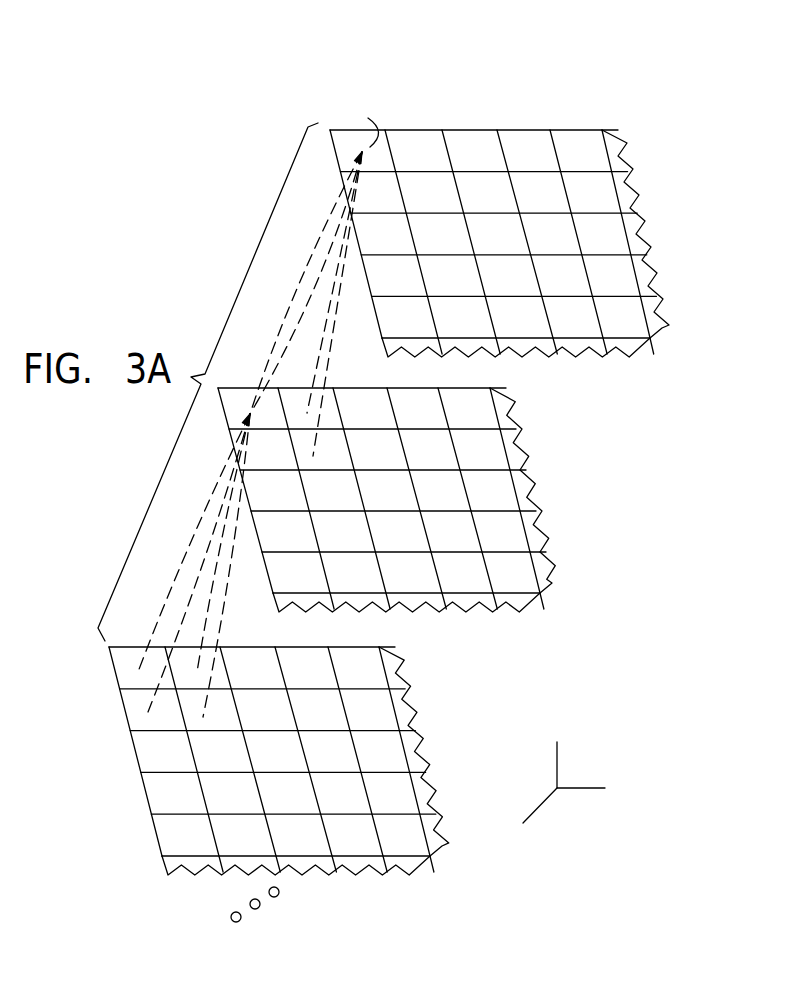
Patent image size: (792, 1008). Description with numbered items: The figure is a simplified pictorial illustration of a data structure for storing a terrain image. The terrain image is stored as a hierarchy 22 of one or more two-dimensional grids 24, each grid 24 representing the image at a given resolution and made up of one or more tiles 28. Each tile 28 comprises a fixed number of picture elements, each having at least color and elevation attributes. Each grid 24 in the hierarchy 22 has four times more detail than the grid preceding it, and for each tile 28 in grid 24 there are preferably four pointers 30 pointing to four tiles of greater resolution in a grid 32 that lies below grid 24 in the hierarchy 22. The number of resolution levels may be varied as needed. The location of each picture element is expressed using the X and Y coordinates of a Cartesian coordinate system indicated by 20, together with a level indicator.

The Cartesian coordinate system 20 is at (602, 735).
The hierarchy 22 is at (710, 85).
The two-dimensional grid 24 is at (658, 215).
The tile 28 is at (366, 115).
The projection paths 30 is at (305, 290).
The grid 32 is at (547, 478).